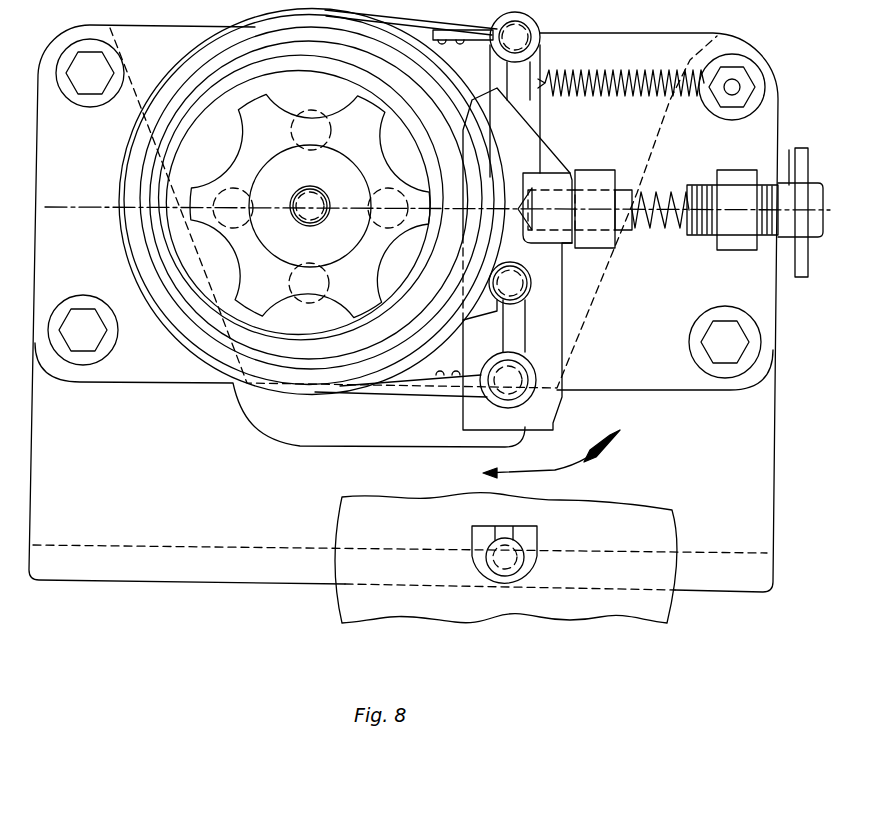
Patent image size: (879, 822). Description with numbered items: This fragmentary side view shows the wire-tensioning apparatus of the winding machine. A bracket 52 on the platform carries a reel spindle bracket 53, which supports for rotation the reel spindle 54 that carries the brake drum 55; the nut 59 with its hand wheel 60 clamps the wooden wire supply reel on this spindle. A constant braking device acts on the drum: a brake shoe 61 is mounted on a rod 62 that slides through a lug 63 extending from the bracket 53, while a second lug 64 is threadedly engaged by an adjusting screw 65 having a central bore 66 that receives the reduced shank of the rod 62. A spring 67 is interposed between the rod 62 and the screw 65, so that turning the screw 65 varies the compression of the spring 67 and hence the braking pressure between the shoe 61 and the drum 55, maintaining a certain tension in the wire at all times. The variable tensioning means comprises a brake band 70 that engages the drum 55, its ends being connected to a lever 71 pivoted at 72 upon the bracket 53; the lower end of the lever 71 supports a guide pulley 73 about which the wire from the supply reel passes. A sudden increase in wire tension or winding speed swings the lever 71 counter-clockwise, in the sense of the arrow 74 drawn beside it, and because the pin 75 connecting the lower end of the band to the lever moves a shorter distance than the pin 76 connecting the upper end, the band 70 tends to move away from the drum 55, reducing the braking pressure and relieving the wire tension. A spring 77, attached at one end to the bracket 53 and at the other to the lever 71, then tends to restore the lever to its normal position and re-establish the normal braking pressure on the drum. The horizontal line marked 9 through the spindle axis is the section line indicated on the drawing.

The section line 9- 9 is at (52, 205).
The bracket 52 is at (770, 420).
The reel spindle bracket 53 is at (612, 26).
The reel spindle 54 is at (322, 195).
The brake drum 55 is at (192, 72).
The nut 59 is at (343, 155).
The hand wheel 60 is at (383, 144).
The brake shoe 61 is at (522, 289).
The rod 62 is at (625, 233).
The lug 63 is at (600, 249).
The lug 64 is at (732, 250).
The adjusting screw 65 is at (800, 200).
The central bore 66 is at (742, 215).
The spring 67 is at (670, 231).
The brake band 70 is at (122, 174).
The lever 71 is at (543, 108).
The pivot 72 is at (519, 237).
The guide pulley 73 is at (337, 527).
The direction arrow 74 is at (551, 457).
The pin 75 is at (532, 394).
The pin 76 is at (541, 38).
The spring 77 is at (660, 70).